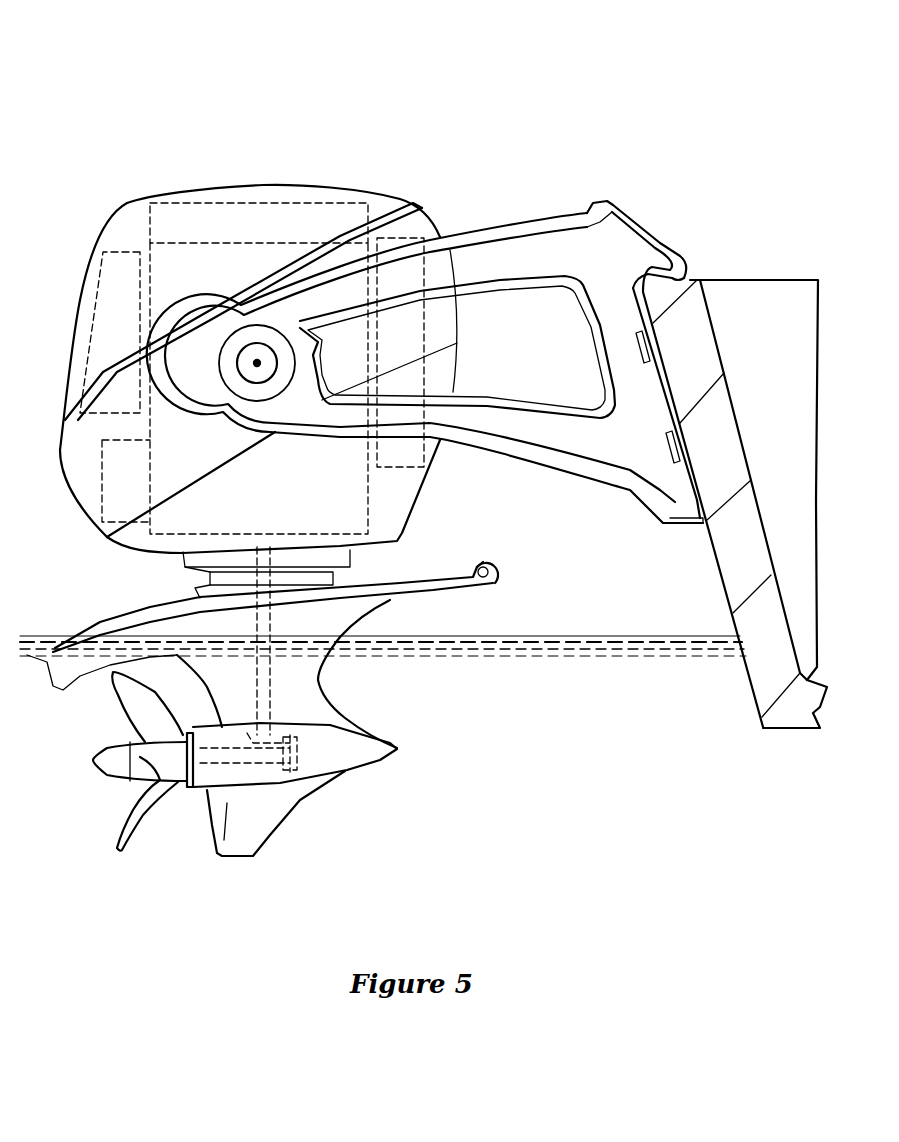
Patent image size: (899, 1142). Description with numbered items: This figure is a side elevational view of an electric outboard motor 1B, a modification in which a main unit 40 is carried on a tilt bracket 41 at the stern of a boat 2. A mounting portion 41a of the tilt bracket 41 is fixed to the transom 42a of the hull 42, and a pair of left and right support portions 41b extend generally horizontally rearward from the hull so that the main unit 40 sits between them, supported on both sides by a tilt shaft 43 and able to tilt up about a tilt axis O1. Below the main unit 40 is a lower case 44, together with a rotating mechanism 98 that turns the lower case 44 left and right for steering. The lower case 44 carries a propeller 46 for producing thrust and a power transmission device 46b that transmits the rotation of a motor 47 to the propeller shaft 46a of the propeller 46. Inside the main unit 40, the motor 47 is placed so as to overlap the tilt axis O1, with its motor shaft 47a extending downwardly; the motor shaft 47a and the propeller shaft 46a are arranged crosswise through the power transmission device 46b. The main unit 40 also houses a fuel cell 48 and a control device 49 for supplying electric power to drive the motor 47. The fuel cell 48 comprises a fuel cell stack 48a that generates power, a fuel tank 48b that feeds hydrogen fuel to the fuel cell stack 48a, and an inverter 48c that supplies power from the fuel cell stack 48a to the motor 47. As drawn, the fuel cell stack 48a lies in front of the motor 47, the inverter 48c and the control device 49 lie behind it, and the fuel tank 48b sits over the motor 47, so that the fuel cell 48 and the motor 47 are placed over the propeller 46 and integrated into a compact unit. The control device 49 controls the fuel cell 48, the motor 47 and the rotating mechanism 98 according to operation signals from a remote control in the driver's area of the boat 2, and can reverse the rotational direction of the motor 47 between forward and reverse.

The electric outboard motor 1B is at (584, 32).
The main unit 40 is at (226, 122).
The fuel cell 48 is at (420, 184).
The fuel cell stack 48a is at (393, 218).
The fuel tank 48b is at (233, 217).
The inverter 48c is at (122, 260).
The motor 47 is at (353, 495).
The control device 49 is at (103, 505).
The tilt bracket 41 is at (569, 468).
The mounting portion 41a is at (653, 257).
The support portion 41b is at (500, 250).
The tilt axis O1 is at (253, 362).
The tilt shaft 43 is at (278, 360).
The rotating mechanism 98 is at (340, 552).
The motor shaft 47a is at (267, 685).
The lower case 44 is at (327, 713).
The propeller 46 is at (125, 850).
The propeller shaft 46a is at (247, 767).
The power transmission device 46b is at (303, 759).
The boat 2 is at (793, 262).
The hull 42 is at (781, 738).
The transom 42a is at (707, 330).